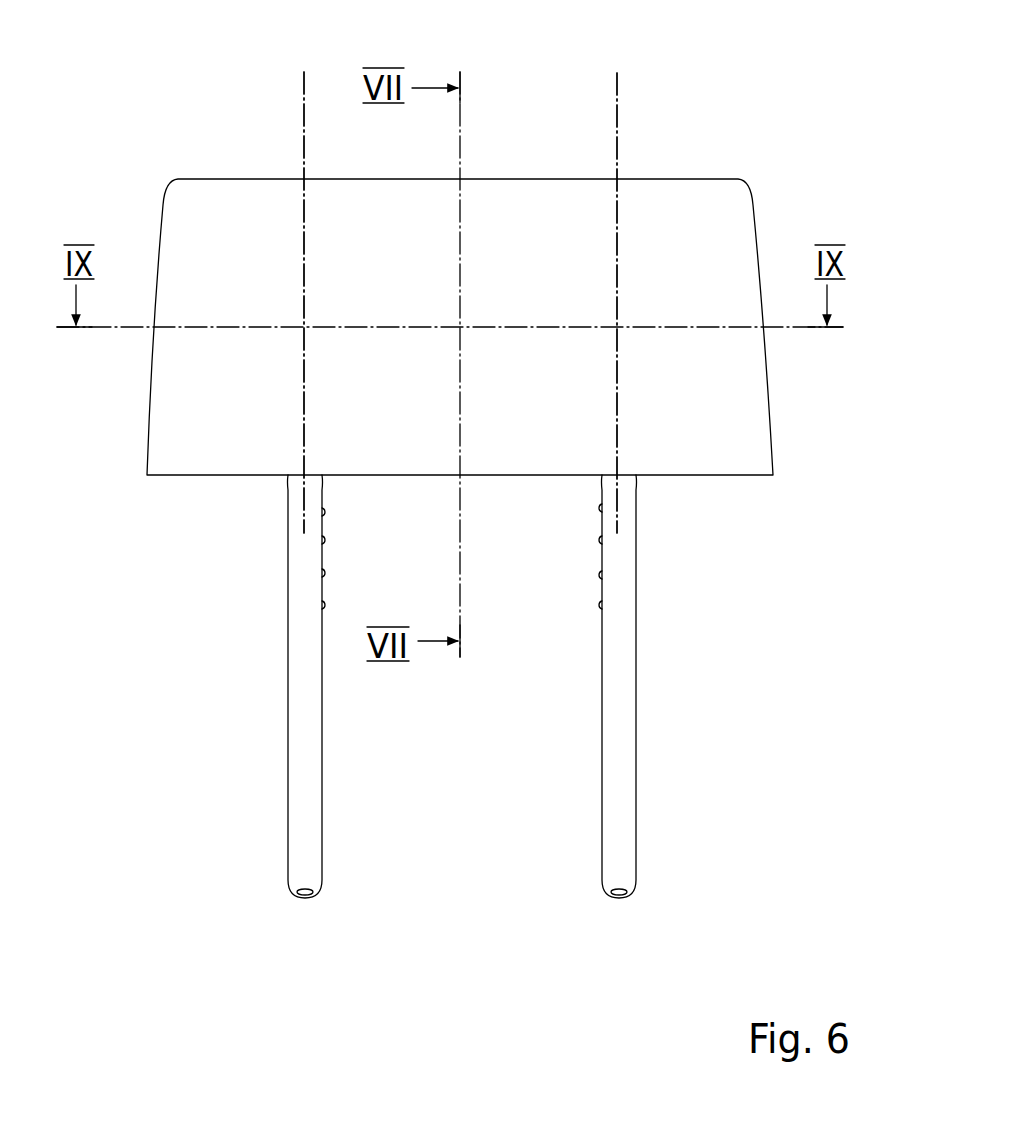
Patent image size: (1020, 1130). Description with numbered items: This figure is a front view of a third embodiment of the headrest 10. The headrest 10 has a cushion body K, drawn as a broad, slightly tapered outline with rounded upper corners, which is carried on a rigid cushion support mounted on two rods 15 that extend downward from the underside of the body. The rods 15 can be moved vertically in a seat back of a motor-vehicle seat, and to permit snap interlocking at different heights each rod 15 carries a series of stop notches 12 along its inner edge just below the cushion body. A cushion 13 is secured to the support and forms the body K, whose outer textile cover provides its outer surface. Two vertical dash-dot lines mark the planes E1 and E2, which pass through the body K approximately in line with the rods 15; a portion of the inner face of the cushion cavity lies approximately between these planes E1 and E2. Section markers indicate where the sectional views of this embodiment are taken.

The headrest 10 is at (688, 135).
The stop notches 12 is at (320, 575).
The cushion 13 is at (259, 426).
The rods 15 is at (300, 675).
The cushion body K is at (215, 176).
The first vertical plane E1 is at (304, 99).
The second vertical plane E2 is at (617, 100).